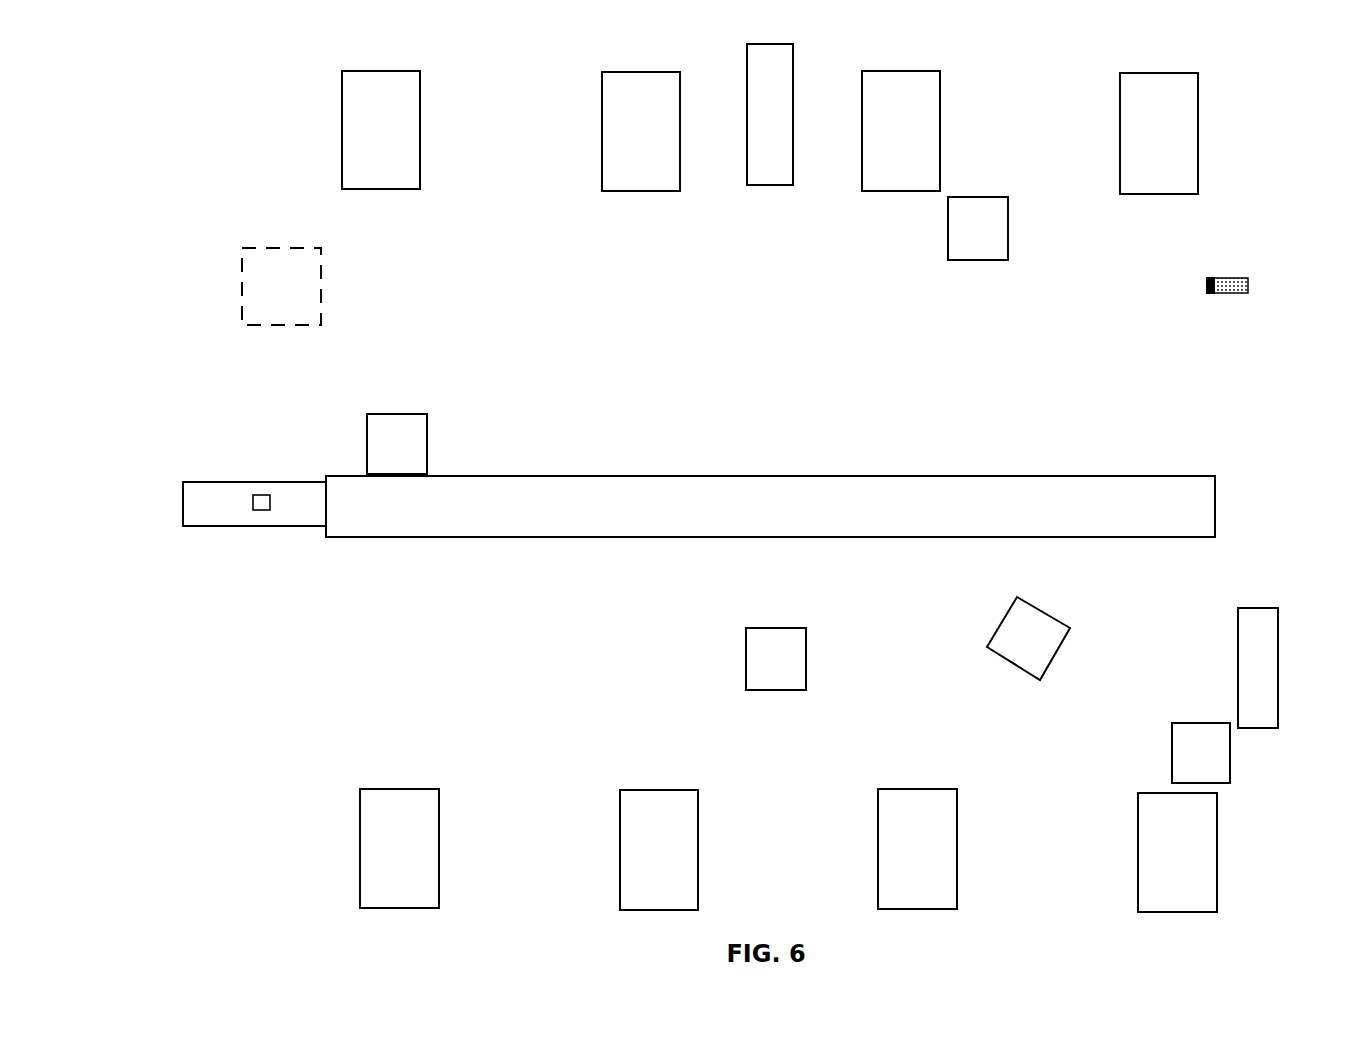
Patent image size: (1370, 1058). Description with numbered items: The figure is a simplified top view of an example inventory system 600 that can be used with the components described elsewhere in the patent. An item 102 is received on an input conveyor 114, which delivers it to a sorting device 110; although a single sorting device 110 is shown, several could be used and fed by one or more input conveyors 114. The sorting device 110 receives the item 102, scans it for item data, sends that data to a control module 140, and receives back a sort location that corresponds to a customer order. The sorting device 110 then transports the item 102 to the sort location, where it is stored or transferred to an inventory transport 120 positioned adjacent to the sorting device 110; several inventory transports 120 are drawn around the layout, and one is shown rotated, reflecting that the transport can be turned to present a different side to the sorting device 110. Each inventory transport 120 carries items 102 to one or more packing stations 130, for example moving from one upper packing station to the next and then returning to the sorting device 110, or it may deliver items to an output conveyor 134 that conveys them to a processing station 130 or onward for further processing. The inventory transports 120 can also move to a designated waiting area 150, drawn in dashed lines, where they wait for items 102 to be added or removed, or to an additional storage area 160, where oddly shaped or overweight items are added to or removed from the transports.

The inventory system 600 is at (158, 176).
The packing station 130 is at (357, 163).
The designated waiting area 150 is at (266, 286).
The output conveyor 134 is at (773, 173).
The inventory transport 120 is at (976, 239).
The control module 140 is at (1243, 283).
The sorting device 110 is at (1202, 517).
The input conveyor 114 is at (217, 511).
The item 102 is at (261, 500).
The additional storage area 160 is at (1252, 672).